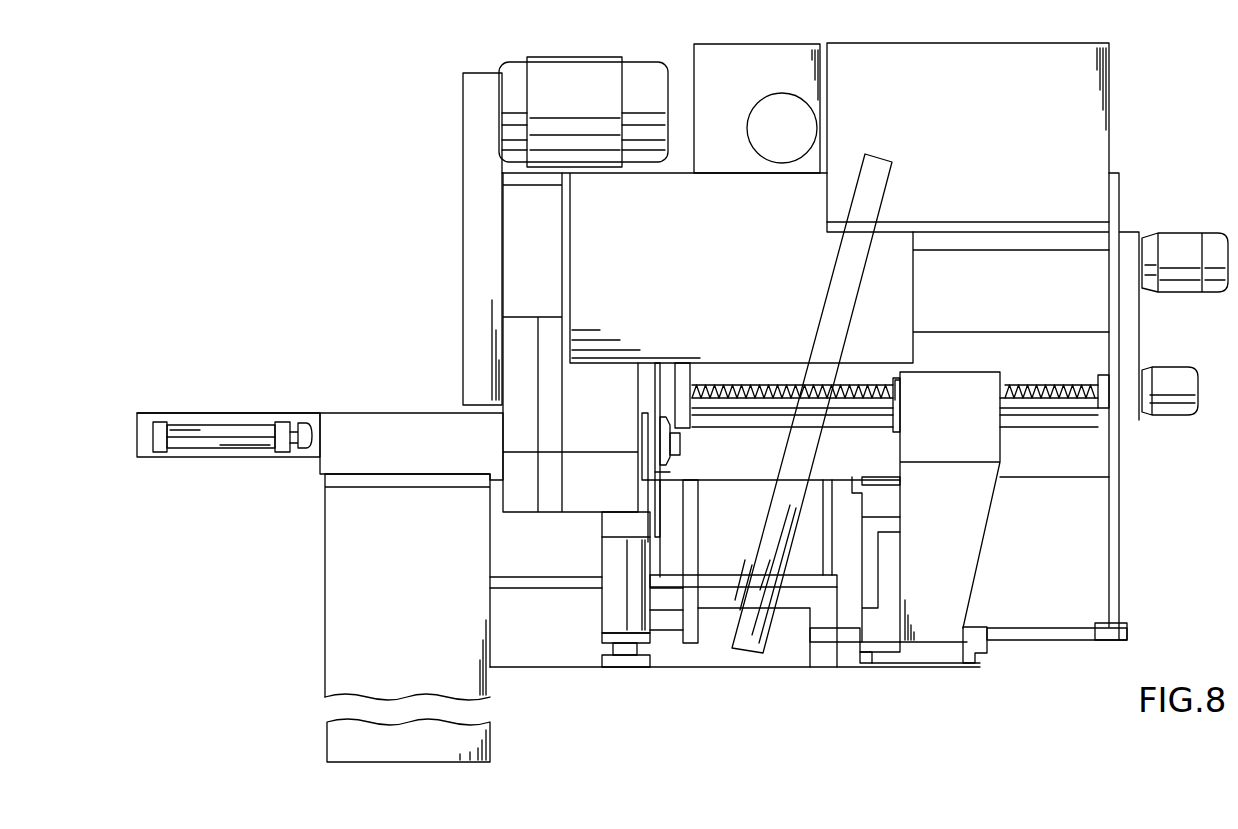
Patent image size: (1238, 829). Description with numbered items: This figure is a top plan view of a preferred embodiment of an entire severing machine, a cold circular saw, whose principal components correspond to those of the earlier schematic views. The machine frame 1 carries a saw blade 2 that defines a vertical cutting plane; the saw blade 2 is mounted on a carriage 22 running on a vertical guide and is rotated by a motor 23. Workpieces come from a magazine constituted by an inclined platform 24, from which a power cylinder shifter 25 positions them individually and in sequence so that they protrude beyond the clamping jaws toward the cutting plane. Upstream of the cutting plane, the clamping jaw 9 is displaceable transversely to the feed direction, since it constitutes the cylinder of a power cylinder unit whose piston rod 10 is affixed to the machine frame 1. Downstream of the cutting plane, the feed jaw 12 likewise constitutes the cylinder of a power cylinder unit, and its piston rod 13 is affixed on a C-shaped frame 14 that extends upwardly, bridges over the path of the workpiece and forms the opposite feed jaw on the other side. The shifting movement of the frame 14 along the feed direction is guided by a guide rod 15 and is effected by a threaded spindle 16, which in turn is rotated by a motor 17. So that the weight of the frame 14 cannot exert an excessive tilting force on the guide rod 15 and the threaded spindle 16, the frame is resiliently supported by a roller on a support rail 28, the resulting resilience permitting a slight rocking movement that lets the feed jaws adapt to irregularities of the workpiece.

The machine frame 1 is at (557, 667).
The saw blade 2 is at (658, 518).
The clamping jaw 9 is at (608, 518).
The piston rod 10 is at (622, 667).
The feed jaw 12 is at (872, 485).
The piston rod 13 is at (877, 653).
The C-shaped frame 14 is at (955, 600).
The guide rod 15 is at (1067, 420).
The threaded spindle 16 is at (1080, 386).
The motor 17 is at (1171, 413).
The carriage 22 is at (593, 433).
The motor 23 is at (533, 122).
The inclined platform 24 is at (345, 638).
The power cylinder shifter 25 is at (233, 425).
The support rail 28 is at (1090, 640).